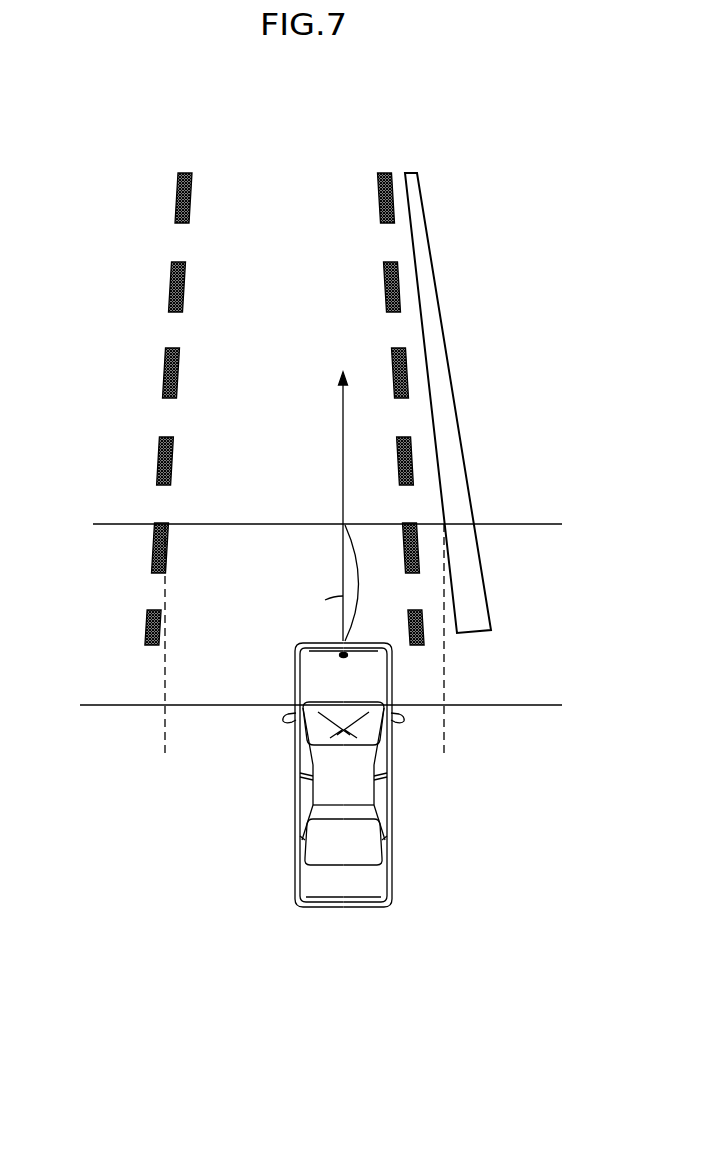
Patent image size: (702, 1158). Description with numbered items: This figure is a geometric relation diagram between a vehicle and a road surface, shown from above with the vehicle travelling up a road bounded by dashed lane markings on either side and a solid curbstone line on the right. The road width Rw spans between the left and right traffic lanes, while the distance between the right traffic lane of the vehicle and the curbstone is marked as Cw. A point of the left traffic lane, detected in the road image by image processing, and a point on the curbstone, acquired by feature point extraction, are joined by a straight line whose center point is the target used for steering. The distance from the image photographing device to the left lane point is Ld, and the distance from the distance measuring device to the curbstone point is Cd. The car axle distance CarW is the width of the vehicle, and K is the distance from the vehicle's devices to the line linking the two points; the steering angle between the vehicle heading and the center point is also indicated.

The road width Rw is at (367, 198).
The distance between right traffic lane and curbstone Cw is at (448, 150).
The distance between vehicle devices and the linking line K is at (354, 583).
The distance between image photographing device and left lane point Ld is at (289, 643).
The distance between distance measuring device and curbstone point Cd is at (431, 643).
The car axle distance CarW is at (392, 908).